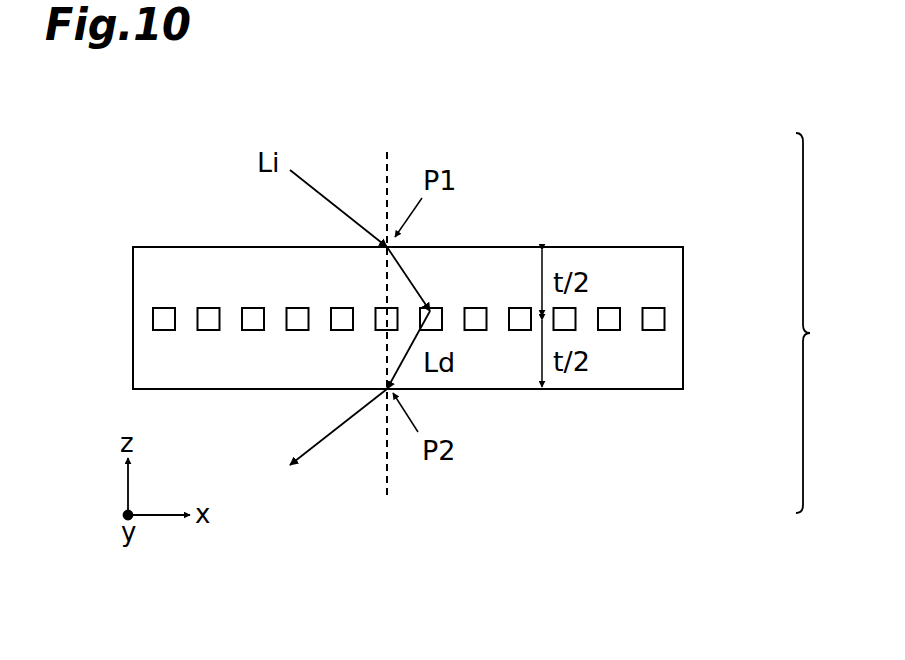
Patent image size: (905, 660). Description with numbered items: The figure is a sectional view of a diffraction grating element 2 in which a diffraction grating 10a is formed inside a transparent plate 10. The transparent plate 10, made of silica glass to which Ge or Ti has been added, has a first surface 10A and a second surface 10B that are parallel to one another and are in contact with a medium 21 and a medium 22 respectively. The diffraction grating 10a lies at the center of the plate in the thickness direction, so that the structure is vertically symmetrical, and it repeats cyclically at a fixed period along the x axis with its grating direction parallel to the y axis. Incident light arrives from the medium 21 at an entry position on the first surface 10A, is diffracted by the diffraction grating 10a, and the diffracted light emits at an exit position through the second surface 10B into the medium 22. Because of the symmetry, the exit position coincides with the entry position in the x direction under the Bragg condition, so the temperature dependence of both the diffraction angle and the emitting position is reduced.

The diffraction grating element 2 is at (840, 352).
The transparent plate 10 is at (672, 263).
The first surface 10A is at (652, 247).
The second surface 10B is at (650, 389).
The diffraction grating 10a is at (664, 318).
The medium 21 is at (658, 148).
The medium 22 is at (658, 495).